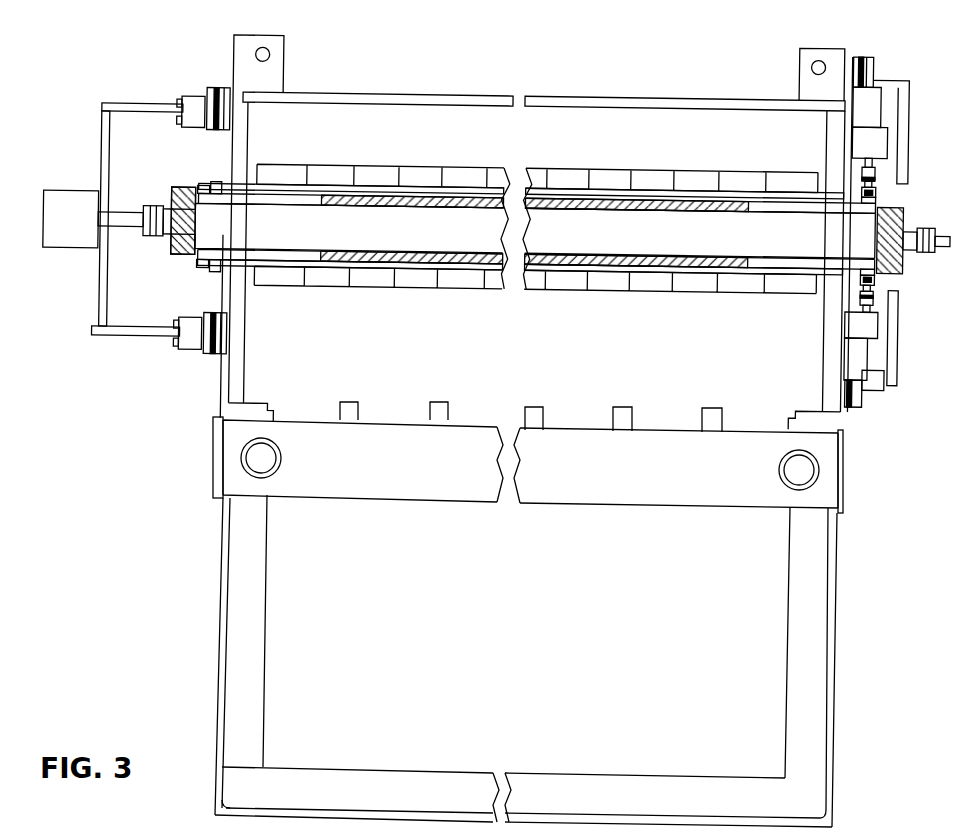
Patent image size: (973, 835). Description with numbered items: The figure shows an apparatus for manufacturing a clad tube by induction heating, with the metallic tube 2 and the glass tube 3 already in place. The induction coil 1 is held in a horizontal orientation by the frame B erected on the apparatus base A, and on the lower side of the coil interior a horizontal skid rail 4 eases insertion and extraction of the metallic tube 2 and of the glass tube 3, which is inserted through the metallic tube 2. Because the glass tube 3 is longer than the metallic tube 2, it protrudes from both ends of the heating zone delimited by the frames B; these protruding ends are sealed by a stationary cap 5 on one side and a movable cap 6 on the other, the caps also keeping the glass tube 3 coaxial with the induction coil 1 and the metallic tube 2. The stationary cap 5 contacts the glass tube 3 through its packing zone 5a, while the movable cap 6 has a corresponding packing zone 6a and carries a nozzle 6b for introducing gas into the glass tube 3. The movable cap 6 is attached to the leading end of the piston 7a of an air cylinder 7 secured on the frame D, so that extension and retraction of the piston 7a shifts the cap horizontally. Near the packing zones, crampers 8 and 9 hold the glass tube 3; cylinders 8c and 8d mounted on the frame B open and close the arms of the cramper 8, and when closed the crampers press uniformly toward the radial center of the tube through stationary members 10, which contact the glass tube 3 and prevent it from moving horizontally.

The induction coil 1 is at (380, 165).
The metallic tube 2 is at (682, 196).
The glass tube 3 is at (410, 240).
The skid rail 4 is at (650, 266).
The stationary cap 5 is at (906, 214).
The packing zone 5a is at (906, 254).
The movable cap 6 is at (174, 200).
The packing zone 6a is at (178, 192).
The nozzle 6b is at (180, 253).
The air cylinder 7 is at (78, 252).
The piston 7a is at (121, 229).
The cramper 8 is at (878, 182).
The cylinder 8c is at (886, 133).
The cylinder 8d is at (874, 318).
The cramper 9 is at (204, 187).
The stationary members 10 is at (217, 182).
The base frame A is at (232, 643).
The frame B is at (246, 343).
The frame D is at (140, 105).